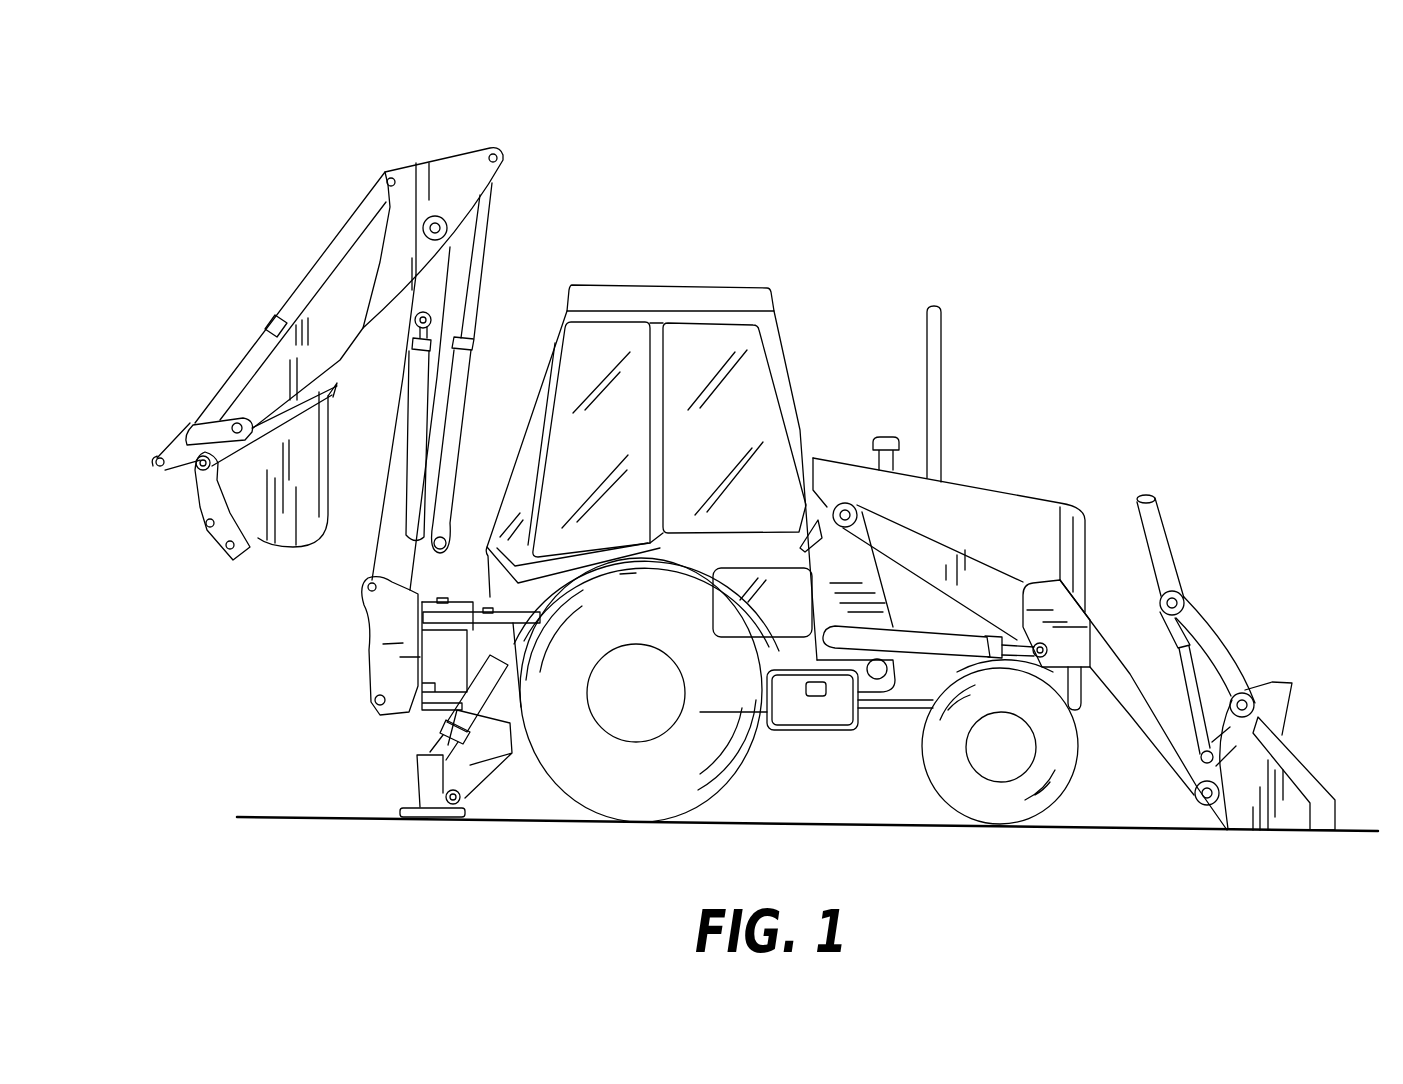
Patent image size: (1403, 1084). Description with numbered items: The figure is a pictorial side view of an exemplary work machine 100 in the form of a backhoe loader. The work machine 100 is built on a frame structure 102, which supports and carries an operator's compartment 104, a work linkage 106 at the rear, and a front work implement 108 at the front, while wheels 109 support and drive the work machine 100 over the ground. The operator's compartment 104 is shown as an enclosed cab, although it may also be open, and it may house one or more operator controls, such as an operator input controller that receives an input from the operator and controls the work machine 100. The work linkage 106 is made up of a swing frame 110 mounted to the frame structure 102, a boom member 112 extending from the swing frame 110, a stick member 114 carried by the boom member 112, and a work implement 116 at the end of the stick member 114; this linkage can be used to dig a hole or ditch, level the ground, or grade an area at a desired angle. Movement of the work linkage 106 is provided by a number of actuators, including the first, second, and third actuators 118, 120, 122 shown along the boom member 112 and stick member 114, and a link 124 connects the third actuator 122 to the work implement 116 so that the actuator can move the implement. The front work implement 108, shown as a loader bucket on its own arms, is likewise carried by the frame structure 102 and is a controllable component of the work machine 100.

The work machine 100 is at (1006, 275).
The frame structure 102 is at (877, 681).
The operator's compartment 104 is at (788, 377).
The work linkage 106 is at (427, 143).
The front work implement 108 is at (1250, 672).
The wheels 109 is at (615, 805).
The swing frame 110 is at (393, 620).
The boom member 112 is at (433, 290).
The stick member 114 is at (343, 298).
The work implement 116 is at (293, 540).
The first actuator 118 is at (457, 380).
The second actuator 120 is at (390, 508).
The third actuator 122 is at (285, 306).
The link 124 is at (183, 493).